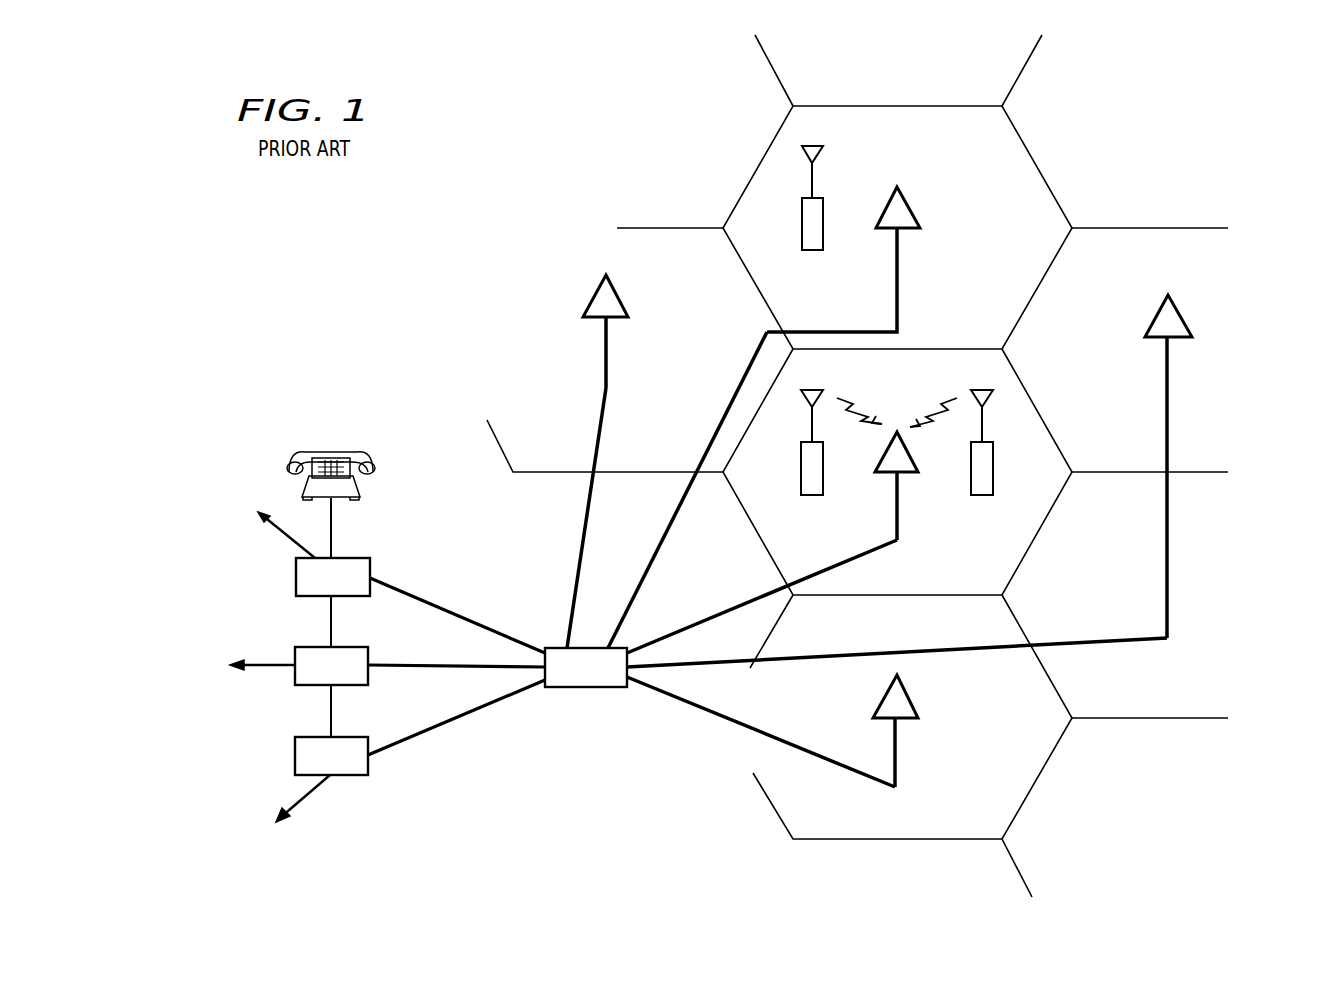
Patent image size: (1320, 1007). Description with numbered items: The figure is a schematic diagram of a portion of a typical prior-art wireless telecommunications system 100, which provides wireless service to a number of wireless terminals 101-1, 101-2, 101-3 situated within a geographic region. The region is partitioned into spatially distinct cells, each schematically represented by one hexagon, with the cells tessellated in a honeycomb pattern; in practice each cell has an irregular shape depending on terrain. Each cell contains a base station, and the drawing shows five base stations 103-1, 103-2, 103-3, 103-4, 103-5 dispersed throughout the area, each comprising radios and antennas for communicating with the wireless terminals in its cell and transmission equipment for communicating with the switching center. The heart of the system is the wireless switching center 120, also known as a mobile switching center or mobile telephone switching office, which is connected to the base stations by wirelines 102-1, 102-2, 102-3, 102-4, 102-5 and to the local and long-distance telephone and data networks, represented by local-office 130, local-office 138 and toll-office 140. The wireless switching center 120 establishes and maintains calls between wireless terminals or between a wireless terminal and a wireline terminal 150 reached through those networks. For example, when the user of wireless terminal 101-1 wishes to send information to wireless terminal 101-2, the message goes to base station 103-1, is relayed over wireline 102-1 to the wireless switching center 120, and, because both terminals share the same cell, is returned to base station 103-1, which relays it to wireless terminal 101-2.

The wireless telecommunications system 100 is at (322, 215).
The wireless terminal 101-1 is at (812, 495).
The wireless terminal 101-2 is at (982, 495).
The wireless terminal 101-3 is at (812, 250).
The wireline 102-1 is at (713, 618).
The wireline 102-2 is at (664, 523).
The wireline 102-3 is at (578, 588).
The wireline 102-4 is at (713, 668).
The wireline 102-5 is at (688, 708).
The base station 103-1 is at (898, 518).
The base station 103-2 is at (898, 263).
The base station 103-3 is at (607, 355).
The base station 103-4 is at (1167, 390).
The base station 103-5 is at (897, 763).
The wireless switching center 120 is at (588, 690).
The local-office 130 is at (296, 570).
The local-office 138 is at (295, 752).
The toll-office 140 is at (296, 650).
The wireline terminal 150 is at (333, 447).